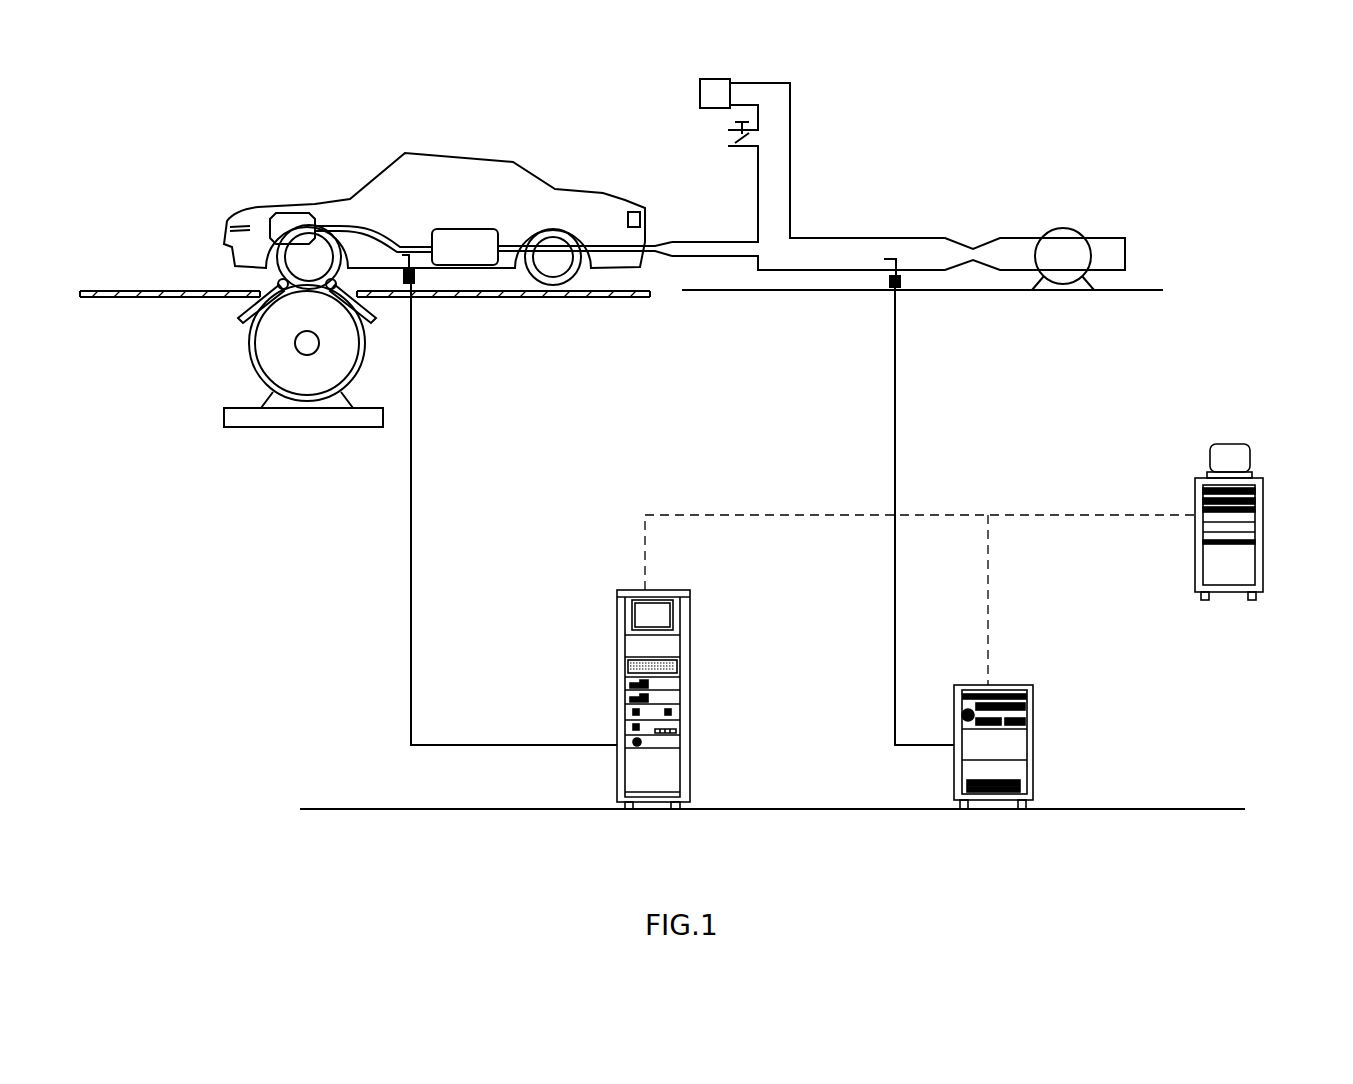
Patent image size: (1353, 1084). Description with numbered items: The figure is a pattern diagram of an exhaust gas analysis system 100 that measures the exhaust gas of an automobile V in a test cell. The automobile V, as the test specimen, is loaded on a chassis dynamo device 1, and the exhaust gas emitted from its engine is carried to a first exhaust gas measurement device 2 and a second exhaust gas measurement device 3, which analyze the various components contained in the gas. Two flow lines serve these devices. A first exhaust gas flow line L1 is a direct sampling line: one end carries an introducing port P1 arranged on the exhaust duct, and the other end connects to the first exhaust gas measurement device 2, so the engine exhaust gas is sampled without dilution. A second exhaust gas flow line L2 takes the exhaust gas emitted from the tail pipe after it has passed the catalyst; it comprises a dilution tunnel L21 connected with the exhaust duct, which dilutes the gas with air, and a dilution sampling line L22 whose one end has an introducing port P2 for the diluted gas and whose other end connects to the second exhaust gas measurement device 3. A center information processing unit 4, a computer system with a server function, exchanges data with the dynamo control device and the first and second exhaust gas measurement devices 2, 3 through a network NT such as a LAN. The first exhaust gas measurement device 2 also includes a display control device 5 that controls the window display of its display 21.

The exhaust gas analysis system 100 is at (265, 126).
The automobile V is at (455, 152).
The chassis dynamo device 1 is at (212, 320).
The introducing port P1 is at (416, 272).
The introducing port P2 is at (902, 288).
The first exhaust gas flow line L1 is at (411, 569).
The second exhaust gas flow line L2 is at (780, 408).
The dilution tunnel L21 is at (825, 271).
The dilution sampling line L22 is at (895, 392).
The network NT is at (920, 586).
The first exhaust gas measurement device 2 is at (598, 585).
The display 21 is at (632, 613).
The display control device 5 is at (681, 649).
The second exhaust gas measurement device 3 is at (1027, 677).
The center information processing unit 4 is at (1270, 470).